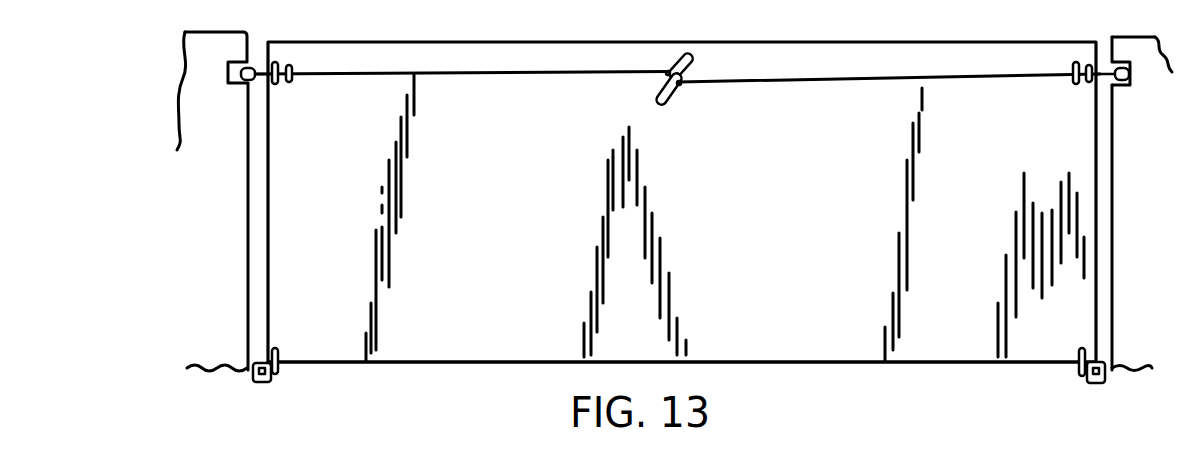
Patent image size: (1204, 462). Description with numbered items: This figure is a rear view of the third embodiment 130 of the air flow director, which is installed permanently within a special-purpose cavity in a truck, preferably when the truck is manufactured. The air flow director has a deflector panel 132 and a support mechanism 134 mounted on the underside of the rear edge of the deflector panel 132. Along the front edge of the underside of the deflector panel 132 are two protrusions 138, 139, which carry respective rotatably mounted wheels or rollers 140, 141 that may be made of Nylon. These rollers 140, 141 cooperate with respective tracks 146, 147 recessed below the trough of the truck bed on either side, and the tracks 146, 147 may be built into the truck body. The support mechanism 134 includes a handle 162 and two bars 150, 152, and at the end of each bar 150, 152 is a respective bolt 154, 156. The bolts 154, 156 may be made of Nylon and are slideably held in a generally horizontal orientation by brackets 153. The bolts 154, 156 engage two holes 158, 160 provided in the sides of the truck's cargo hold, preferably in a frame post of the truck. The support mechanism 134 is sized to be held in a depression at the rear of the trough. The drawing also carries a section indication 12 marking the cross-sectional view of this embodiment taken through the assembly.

The section line 12- 12 is at (396, 17).
The third embodiment 130 is at (872, 391).
The deflector panel 132 is at (518, 366).
The support mechanism 134 is at (735, 152).
The protrusion 138 is at (1078, 357).
The protrusion 139 is at (281, 357).
The roller 140 is at (1100, 387).
The roller 141 is at (258, 383).
The track 146 is at (1104, 356).
The track 147 is at (250, 352).
The bar 150 is at (500, 76).
The bar 152 is at (862, 84).
The brackets 153 is at (283, 86).
The bolt 154 is at (254, 62).
The bolt 156 is at (1102, 68).
The hole 158 is at (231, 84).
The hole 160 is at (1135, 80).
The handle 162 is at (656, 100).